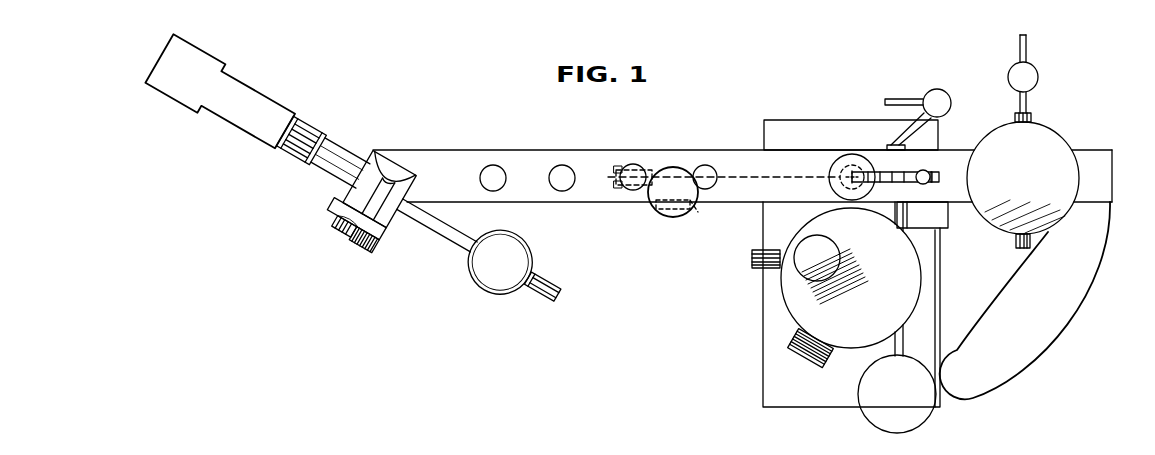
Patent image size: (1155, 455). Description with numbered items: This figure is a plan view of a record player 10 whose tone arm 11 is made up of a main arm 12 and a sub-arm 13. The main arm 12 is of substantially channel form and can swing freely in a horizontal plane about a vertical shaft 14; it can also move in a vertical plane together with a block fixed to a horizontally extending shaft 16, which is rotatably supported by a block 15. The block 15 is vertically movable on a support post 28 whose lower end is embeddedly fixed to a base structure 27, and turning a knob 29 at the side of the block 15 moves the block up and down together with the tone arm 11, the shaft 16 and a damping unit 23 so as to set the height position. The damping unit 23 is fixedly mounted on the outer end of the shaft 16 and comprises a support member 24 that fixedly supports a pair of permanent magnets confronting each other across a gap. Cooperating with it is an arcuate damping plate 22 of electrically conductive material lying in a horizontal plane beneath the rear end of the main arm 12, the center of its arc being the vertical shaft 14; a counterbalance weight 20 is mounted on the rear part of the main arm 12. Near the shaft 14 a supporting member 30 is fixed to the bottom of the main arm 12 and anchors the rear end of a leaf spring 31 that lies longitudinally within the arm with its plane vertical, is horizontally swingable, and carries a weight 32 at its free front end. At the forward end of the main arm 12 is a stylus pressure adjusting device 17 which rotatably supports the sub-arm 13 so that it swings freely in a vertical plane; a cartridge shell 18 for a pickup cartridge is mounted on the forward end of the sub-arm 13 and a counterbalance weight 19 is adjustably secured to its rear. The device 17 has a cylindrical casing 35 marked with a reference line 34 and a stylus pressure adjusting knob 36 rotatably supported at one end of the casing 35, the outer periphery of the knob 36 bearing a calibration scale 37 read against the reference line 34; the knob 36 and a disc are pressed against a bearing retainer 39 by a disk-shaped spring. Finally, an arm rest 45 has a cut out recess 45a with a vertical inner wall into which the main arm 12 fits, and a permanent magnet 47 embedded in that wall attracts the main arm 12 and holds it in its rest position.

The record player 10 is at (714, 89).
The tone arm 11 is at (474, 148).
The main arm 12 is at (564, 147).
The sub-arm 13 is at (341, 152).
The vertical shaft 14 is at (850, 168).
The block 15 is at (785, 302).
The horizontally extending shaft 16 is at (903, 339).
The stylus pressure adjusting device 17 is at (404, 225).
The cartridge shell 18 is at (265, 101).
The counterbalance weight 19 is at (504, 291).
The counterbalance weight 20 is at (997, 133).
The arcuate damping plate 22 is at (1028, 357).
The damping unit 23 is at (914, 436).
The support member 24 is at (883, 427).
The base structure 27 is at (797, 412).
The support post 28 is at (840, 248).
The knob 29 is at (797, 347).
The supporting member 30 is at (828, 168).
The leaf spring 31 is at (728, 172).
The weight 32 is at (648, 170).
The reference line 34 is at (384, 177).
The cylindrical casing 35 is at (345, 192).
The stylus pressure adjusting knob 36 is at (333, 213).
The calibration scale 37 is at (341, 225).
The bearing retainer 39 is at (354, 250).
The arm rest 45 is at (660, 216).
The cut out recess 45a is at (703, 211).
The permanent magnet 47 is at (674, 205).